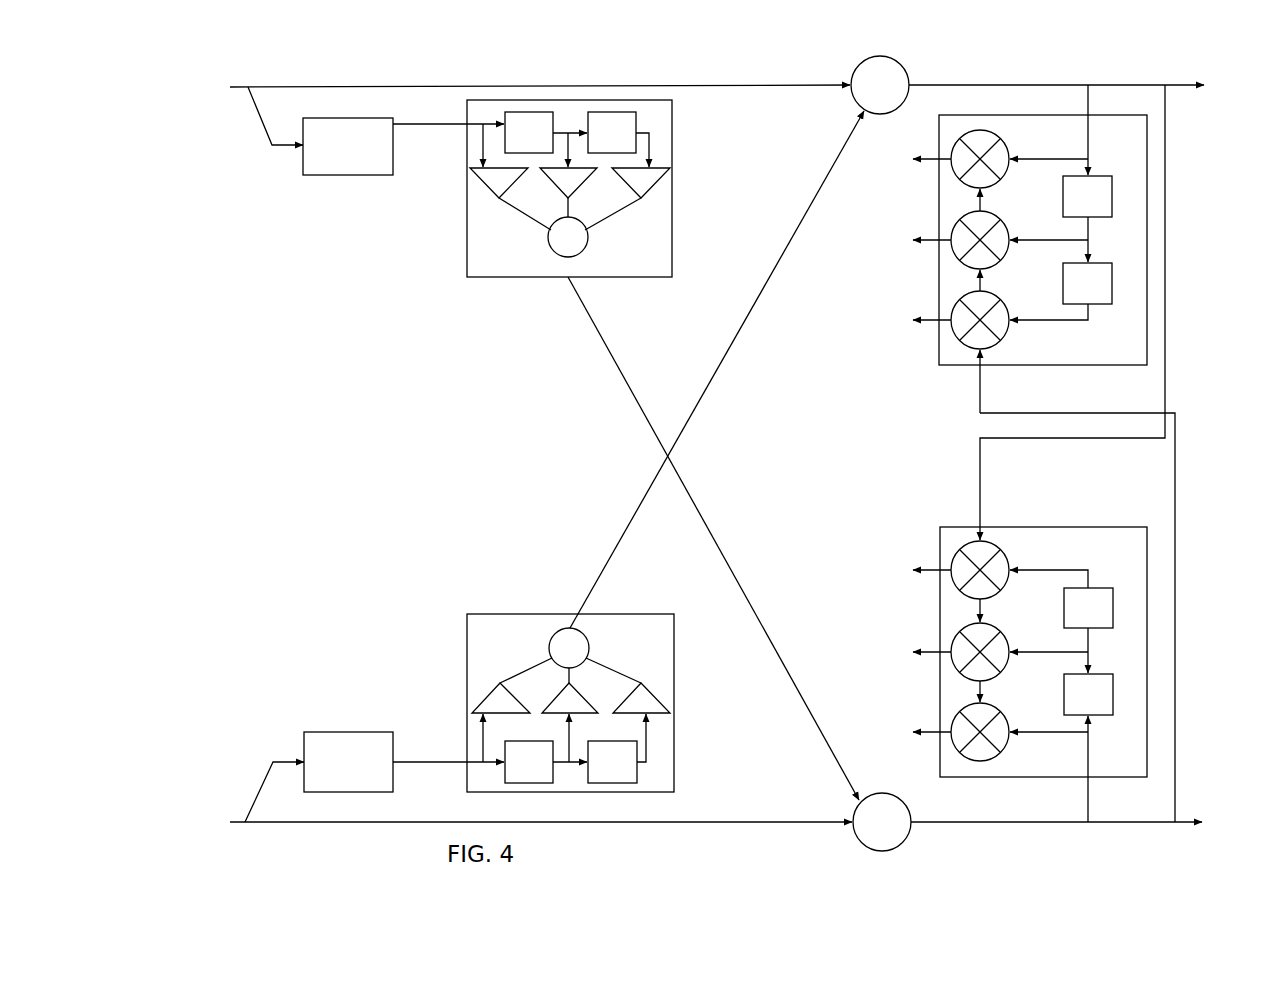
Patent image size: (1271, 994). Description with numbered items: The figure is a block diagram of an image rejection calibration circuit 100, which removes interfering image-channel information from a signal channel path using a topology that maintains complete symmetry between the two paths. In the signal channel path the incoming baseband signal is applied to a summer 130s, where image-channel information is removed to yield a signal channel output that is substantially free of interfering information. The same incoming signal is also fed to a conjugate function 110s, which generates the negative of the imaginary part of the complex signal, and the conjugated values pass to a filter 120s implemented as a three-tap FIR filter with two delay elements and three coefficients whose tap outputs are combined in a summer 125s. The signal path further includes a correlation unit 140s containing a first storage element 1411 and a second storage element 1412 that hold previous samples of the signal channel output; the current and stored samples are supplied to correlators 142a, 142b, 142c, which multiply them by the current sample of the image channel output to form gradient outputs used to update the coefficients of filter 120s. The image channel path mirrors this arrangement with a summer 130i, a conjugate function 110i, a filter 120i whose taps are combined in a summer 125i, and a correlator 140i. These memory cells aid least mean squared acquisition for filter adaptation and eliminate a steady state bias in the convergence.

The IR calibration circuit 100 is at (222, 45).
The conjugate function 110s is at (350, 176).
The conjugate function 110i is at (350, 792).
The filter 120s is at (569, 204).
The filter 120i is at (570, 693).
The summer 125s is at (583, 248).
The summer 125i is at (582, 641).
The summer 130s is at (885, 57).
The summer 130i is at (880, 851).
The correlation unit 140s is at (1004, 427).
The correlator 140i is at (1108, 777).
The correlator 142a is at (1012, 127).
The correlator 142b is at (1012, 207).
The correlator 142c is at (1012, 287).
The storage element 1411 is at (1113, 197).
The storage element 1412 is at (1113, 285).